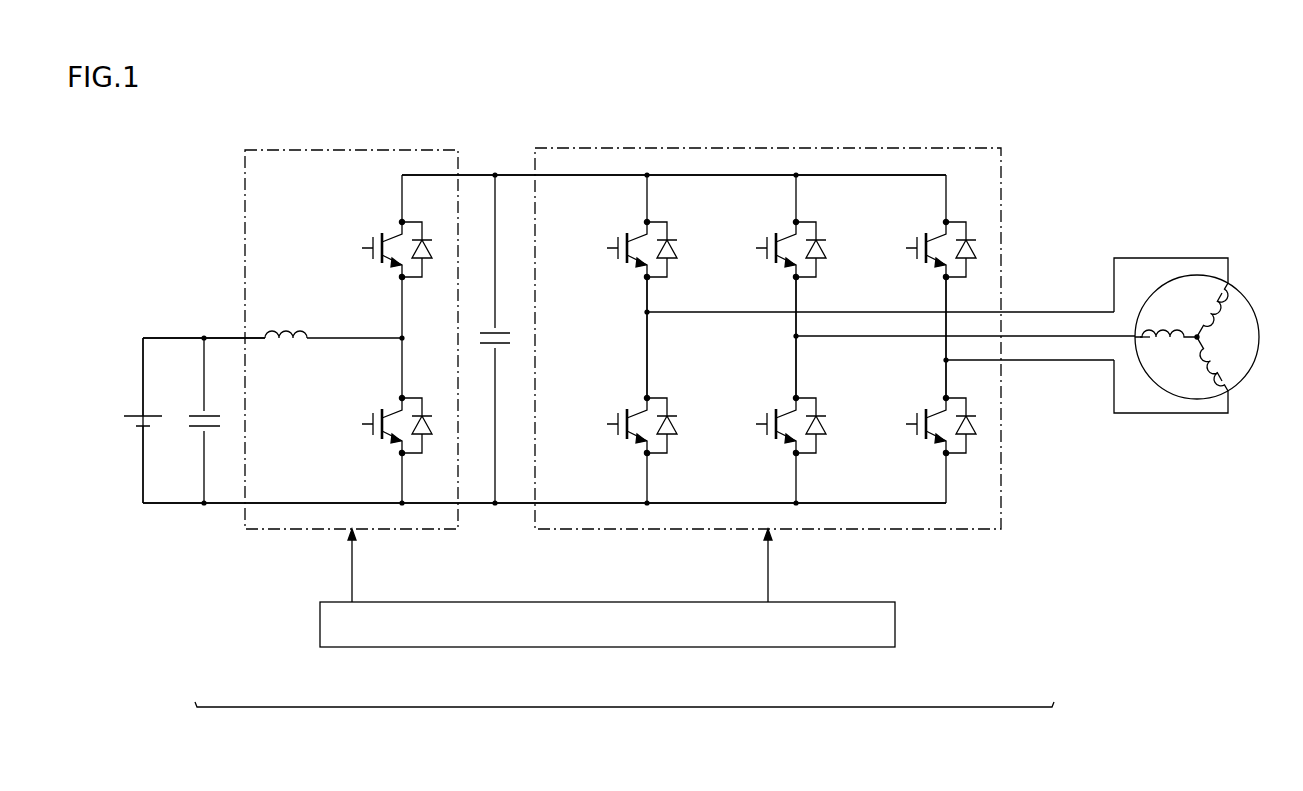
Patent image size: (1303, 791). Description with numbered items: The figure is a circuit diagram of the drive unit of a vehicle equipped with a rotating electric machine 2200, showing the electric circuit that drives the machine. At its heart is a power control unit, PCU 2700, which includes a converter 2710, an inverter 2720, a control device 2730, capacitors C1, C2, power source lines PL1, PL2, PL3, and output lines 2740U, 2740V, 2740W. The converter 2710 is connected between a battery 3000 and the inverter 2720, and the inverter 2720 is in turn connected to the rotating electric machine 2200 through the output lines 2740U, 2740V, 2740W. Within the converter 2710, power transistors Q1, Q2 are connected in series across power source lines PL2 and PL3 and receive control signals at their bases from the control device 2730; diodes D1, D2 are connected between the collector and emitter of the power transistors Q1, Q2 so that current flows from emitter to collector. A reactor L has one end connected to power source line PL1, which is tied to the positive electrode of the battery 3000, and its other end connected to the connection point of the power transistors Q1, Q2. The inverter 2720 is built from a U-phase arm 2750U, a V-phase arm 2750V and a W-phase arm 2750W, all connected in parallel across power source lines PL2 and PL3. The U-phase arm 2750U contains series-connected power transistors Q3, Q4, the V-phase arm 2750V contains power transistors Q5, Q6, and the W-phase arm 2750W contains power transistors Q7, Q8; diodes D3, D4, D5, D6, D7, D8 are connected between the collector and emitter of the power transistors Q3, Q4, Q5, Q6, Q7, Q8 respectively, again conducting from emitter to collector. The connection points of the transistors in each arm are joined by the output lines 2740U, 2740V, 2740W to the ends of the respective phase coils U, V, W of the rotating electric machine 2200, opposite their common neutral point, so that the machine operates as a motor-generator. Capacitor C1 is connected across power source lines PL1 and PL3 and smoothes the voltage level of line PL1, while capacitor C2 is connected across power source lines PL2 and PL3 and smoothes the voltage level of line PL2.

The PCU (Power Control Unit) 2700 is at (624, 722).
The converter 2710 is at (351, 150).
The inverter 2720 is at (953, 148).
The control device 2730 is at (866, 650).
The rotating electric machine 2200 is at (1207, 334).
The battery 3000 is at (133, 413).
The power source line PL1 is at (196, 335).
The power source line PL2 is at (476, 172).
The power source line PL3 is at (476, 506).
The reactor L is at (284, 326).
The capacitor C1 is at (212, 413).
The capacitor C2 is at (506, 330).
The power transistor Q1 is at (372, 238).
The power transistor Q2 is at (372, 414).
The power transistor Q3 is at (617, 238).
The power transistor Q4 is at (617, 414).
The power transistor Q5 is at (766, 238).
The power transistor Q6 is at (766, 414).
The power transistor Q7 is at (916, 238).
The power transistor Q8 is at (916, 414).
The diode D1 is at (428, 246).
The diode D2 is at (428, 422).
The diode D3 is at (673, 246).
The diode D4 is at (673, 422).
The diode D5 is at (822, 246).
The diode D6 is at (822, 422).
The diode D7 is at (972, 246).
The diode D8 is at (972, 430).
The output line 2740U is at (686, 315).
The output line 2740V is at (833, 339).
The output line 2740W is at (976, 362).
The U-phase arm 2750U is at (641, 319).
The V-phase arm 2750V is at (788, 343).
The W-phase arm 2750W is at (939, 366).
The U-phase coil U is at (1228, 310).
The V-phase coil V is at (1155, 319).
The W-phase coil W is at (1201, 373).